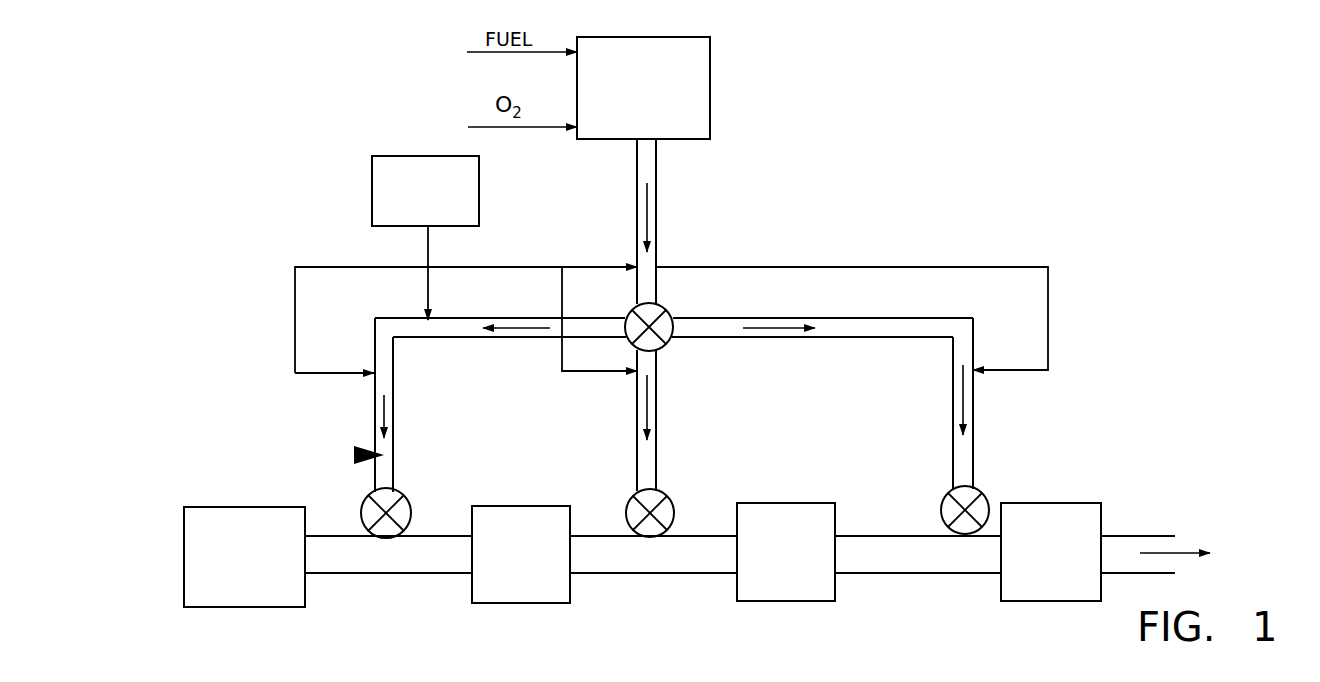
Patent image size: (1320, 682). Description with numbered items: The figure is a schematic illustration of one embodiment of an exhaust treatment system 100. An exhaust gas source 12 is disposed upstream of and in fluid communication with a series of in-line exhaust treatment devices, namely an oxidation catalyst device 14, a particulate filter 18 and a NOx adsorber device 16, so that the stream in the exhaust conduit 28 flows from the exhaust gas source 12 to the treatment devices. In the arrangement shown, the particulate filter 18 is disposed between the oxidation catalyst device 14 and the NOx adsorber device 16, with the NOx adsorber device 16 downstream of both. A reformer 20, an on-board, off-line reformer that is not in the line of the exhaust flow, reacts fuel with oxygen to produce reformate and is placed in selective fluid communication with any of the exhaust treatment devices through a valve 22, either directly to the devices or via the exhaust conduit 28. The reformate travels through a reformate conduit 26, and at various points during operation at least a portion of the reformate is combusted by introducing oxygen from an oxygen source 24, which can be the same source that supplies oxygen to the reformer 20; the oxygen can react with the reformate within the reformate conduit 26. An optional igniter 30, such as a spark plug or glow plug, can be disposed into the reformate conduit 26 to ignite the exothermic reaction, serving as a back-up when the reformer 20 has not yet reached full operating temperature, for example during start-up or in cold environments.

The exhaust treatment system 100 is at (992, 124).
The exhaust gas source 12 is at (256, 570).
The oxidation catalyst device 14 is at (532, 568).
The NOx adsorber device 16 is at (1062, 565).
The particulate filter 18 is at (797, 565).
The reformer 20 is at (656, 104).
The valve 22 is at (665, 348).
The oxygen source 24 is at (438, 205).
The reformate conduit 26 is at (395, 361).
The exhaust conduit 28 is at (373, 577).
The igniter 30 is at (366, 449).